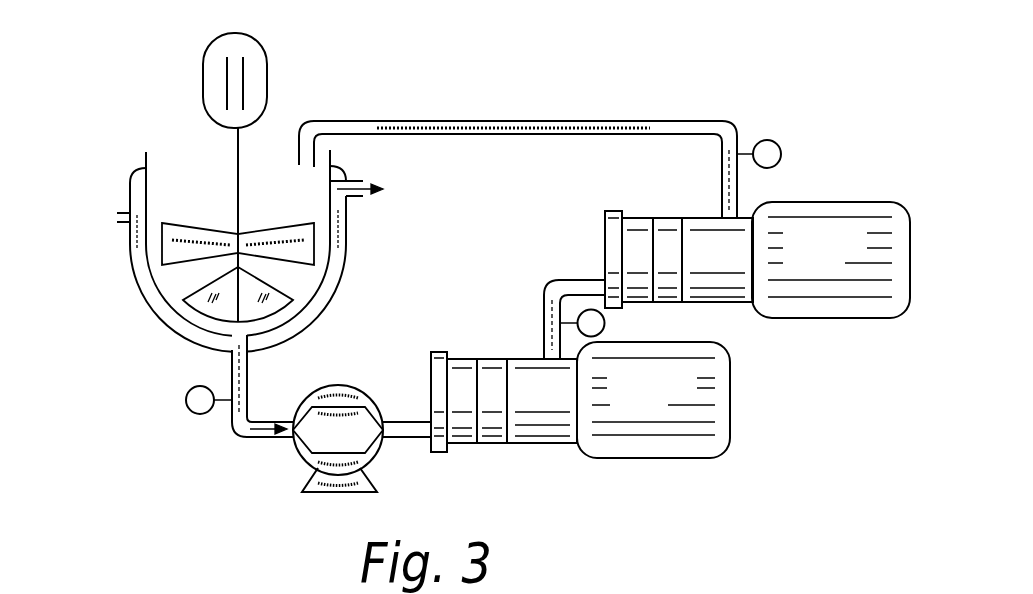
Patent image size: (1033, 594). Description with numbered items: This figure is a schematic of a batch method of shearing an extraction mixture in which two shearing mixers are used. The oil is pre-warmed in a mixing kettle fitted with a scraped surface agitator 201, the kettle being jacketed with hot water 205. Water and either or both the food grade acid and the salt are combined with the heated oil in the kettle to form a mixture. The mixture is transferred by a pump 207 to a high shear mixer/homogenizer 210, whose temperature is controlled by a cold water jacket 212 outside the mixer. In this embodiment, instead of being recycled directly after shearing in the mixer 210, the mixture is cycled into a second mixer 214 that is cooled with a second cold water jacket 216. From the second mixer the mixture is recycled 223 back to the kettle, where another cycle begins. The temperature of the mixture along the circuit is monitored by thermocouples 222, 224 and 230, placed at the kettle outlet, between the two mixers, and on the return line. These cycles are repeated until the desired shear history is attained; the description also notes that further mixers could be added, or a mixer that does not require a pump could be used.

The scraped surface agitator 201 is at (236, 210).
The hot water jacket 205 is at (124, 222).
The pump 207 is at (362, 438).
The high shear mixer/homogenizer 210 is at (653, 400).
The cold water jacket 212 is at (522, 342).
The second mixer 214 is at (831, 260).
The second cold water jacket 216 is at (668, 201).
The thermocouple 222 is at (767, 140).
The recycle line 223 is at (505, 121).
The thermocouple 224 is at (200, 386).
The thermocouple 230 is at (605, 323).